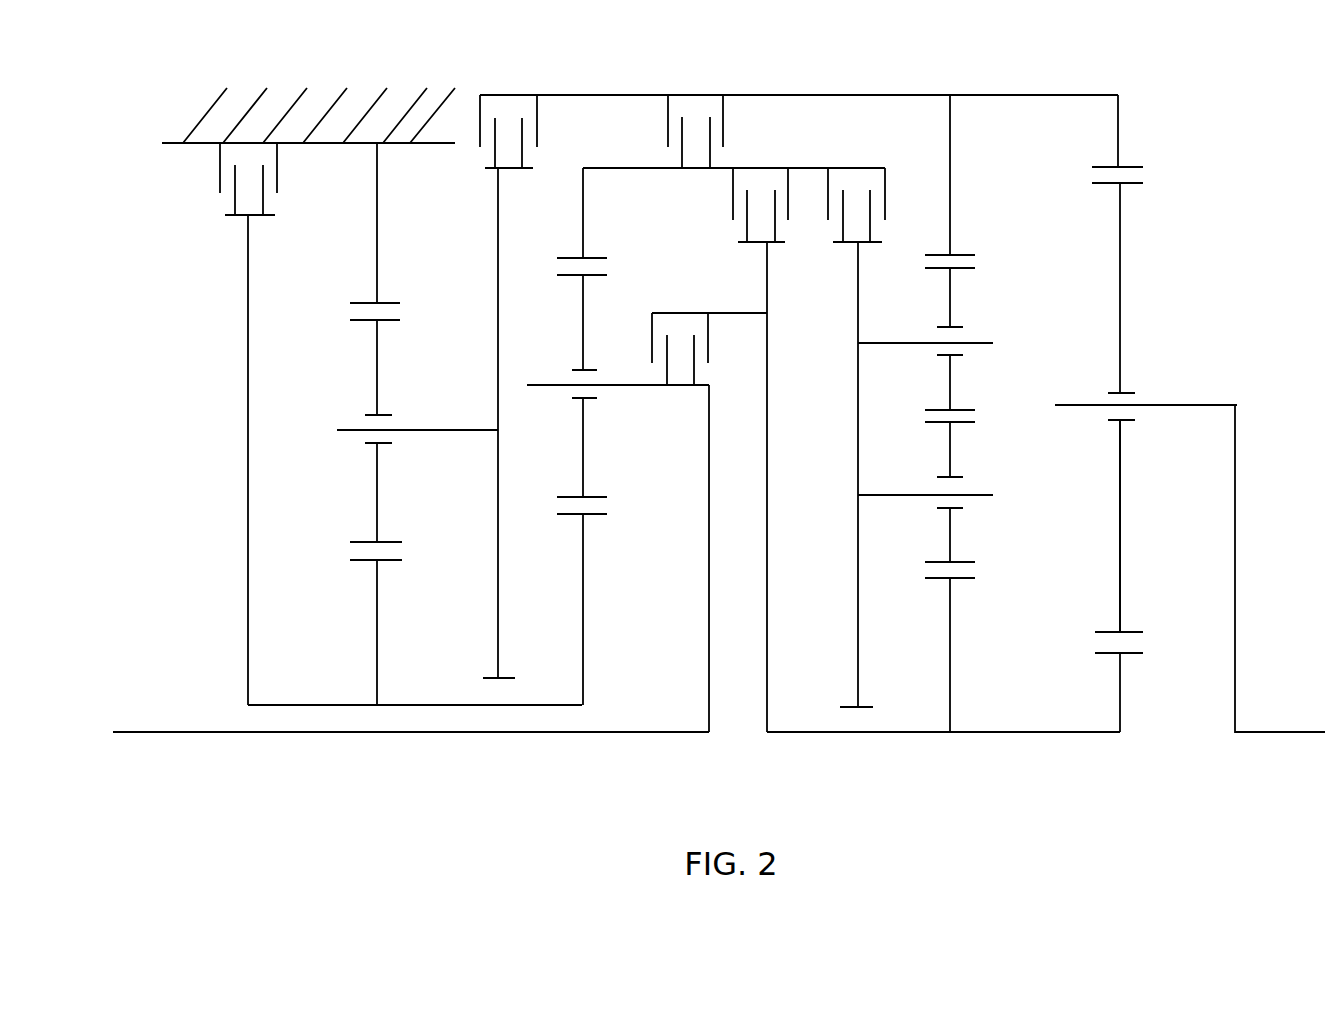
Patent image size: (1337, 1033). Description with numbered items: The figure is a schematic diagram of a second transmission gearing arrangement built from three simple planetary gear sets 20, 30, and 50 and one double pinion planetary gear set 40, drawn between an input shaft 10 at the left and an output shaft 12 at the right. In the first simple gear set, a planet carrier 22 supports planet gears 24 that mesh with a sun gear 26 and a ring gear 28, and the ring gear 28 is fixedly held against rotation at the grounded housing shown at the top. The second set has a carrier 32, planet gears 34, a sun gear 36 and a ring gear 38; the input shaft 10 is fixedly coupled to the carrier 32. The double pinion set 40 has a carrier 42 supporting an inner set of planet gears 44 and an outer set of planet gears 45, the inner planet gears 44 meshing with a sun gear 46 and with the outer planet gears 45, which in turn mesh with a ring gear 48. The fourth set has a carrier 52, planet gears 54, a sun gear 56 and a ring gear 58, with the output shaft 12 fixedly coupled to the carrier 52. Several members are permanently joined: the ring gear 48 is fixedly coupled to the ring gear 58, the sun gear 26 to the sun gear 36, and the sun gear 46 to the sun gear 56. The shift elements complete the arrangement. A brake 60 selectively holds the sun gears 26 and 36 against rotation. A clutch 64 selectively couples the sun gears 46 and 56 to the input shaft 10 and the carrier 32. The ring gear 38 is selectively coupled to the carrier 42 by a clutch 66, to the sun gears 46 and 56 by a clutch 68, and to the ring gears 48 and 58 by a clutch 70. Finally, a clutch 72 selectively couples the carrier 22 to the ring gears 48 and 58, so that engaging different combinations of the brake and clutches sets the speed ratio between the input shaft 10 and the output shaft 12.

The input shaft 10 is at (242, 732).
The output shaft 12 is at (1292, 732).
The first planetary gear set 20 is at (415, 464).
The planet carrier 22 is at (497, 412).
The planet gears 24 is at (378, 373).
The sun gear 26 is at (375, 598).
The ring gear 28 is at (377, 268).
The second planetary gear set 30 is at (618, 533).
The planet carrier 32 is at (709, 452).
The planet gears 34 is at (587, 330).
The sun gear 36 is at (587, 530).
The ring gear 38 is at (583, 230).
The double pinion planetary gear set 40 is at (943, 556).
The planet carrier 42 is at (858, 445).
The inner planet gears 44 is at (950, 458).
The outer planet gears 45 is at (952, 307).
The sun gear 46 is at (950, 637).
The ring gear 48 is at (952, 213).
The fourth planetary gear set 50 is at (1146, 591).
The planet carrier 52 is at (1232, 400).
The planet gears 54 is at (1118, 342).
The sun gear 56 is at (1122, 693).
The ring gear 58 is at (1118, 140).
The brake 60 is at (220, 165).
The clutch 64 is at (708, 330).
The clutch 66 is at (885, 200).
The clutch 68 is at (733, 190).
The clutch 70 is at (723, 120).
The clutch 72 is at (490, 93).